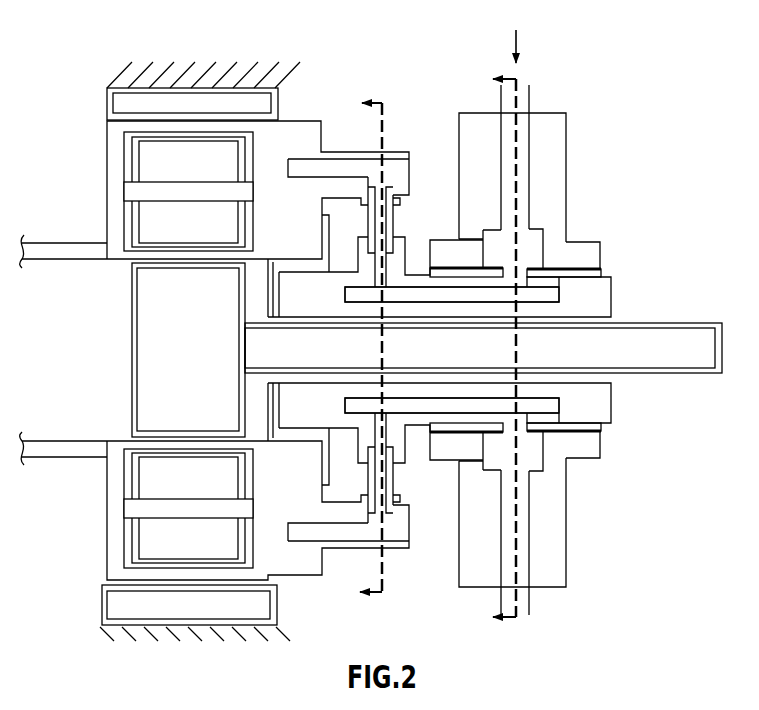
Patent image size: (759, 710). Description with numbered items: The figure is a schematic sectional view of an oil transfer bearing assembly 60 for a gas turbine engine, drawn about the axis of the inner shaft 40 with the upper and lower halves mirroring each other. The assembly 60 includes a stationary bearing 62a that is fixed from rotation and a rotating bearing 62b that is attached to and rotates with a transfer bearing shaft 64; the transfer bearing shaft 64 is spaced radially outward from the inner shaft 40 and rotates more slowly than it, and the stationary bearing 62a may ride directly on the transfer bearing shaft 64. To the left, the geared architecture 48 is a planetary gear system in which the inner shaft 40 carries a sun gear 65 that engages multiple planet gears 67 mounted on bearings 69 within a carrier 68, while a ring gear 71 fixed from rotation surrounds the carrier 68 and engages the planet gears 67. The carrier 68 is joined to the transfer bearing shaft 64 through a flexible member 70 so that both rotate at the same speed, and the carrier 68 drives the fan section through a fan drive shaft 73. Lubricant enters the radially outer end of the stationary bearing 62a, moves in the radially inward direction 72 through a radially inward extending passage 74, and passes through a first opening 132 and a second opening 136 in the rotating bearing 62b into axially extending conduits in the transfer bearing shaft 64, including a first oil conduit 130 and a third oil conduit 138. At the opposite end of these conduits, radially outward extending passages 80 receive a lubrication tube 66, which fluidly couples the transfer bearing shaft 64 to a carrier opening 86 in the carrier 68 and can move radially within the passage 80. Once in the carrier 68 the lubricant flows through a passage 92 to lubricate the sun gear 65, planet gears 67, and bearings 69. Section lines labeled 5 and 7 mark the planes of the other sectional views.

The inner shaft 40 is at (686, 332).
The geared architecture 48 is at (301, 80).
The oil transfer bearing assembly 60 is at (470, 334).
The stationary bearing 62a is at (567, 186).
The rotating bearing 62b is at (603, 271).
The transfer bearing shaft 64 is at (613, 292).
The sun gear 65 is at (145, 337).
The lubrication tube 66 is at (398, 207).
The planet gears 67 is at (150, 172).
The carrier 68 is at (308, 121).
The bearings 69 is at (152, 203).
The flexible member 70 is at (267, 310).
The ring gear 71 is at (118, 600).
The radially inward direction 72 is at (517, 31).
The fan drive shaft 73 is at (70, 243).
The radially inward extending passage 74 is at (523, 158).
The radially outward extending passages 80 is at (378, 290).
The carrier opening 86 is at (390, 175).
The passage 92 is at (326, 167).
The first oil conduit 130 is at (459, 291).
The first opening 132 is at (521, 270).
The second opening 136 is at (521, 430).
The third oil conduit 138 is at (457, 408).
The section line 5- 5 is at (374, 351).
The section line 7- 7 is at (496, 348).